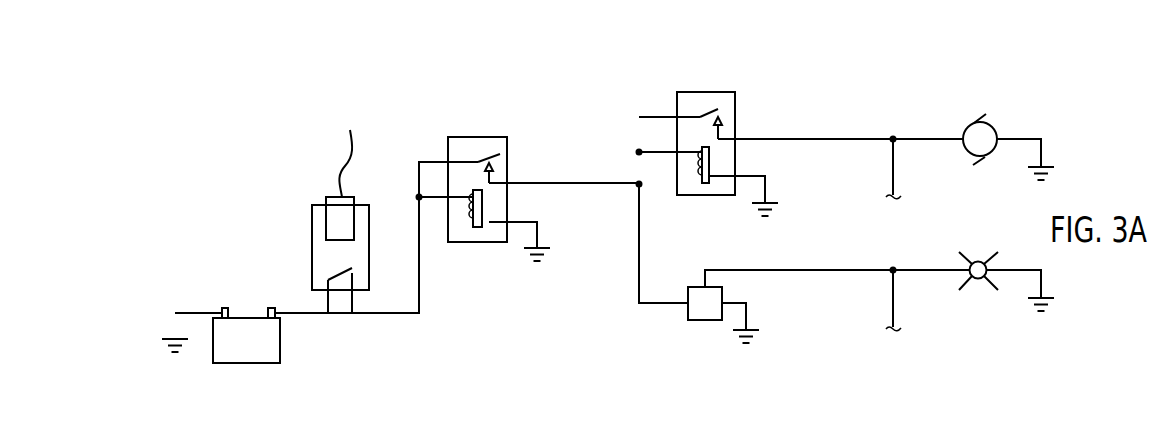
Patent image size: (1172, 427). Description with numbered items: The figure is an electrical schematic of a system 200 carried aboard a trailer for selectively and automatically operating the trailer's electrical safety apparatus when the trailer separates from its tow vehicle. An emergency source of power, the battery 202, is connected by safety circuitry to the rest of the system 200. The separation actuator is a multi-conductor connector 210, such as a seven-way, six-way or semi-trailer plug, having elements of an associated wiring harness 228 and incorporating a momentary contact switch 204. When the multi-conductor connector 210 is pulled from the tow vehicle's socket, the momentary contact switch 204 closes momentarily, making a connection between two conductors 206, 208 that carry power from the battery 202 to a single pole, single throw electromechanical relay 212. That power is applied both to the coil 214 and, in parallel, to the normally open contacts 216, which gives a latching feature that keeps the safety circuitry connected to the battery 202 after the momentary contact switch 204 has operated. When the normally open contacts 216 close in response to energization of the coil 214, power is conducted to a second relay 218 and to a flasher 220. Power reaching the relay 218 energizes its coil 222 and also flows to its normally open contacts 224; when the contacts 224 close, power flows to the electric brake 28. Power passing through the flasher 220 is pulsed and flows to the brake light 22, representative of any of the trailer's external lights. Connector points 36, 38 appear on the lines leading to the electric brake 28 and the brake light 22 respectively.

The system 200 is at (1070, 73).
The battery 202 is at (243, 363).
The momentary contact switch 204 is at (300, 270).
The conductor 206 is at (300, 314).
The conductor 208 is at (395, 314).
The multi-conductor connector 210 is at (323, 181).
The relay 212 is at (468, 126).
The coil 214 is at (477, 249).
The normally open contacts 216 is at (504, 207).
The second relay 218 is at (699, 84).
The flasher 220 is at (700, 321).
The coil 222 is at (707, 199).
The normally open contacts 224 is at (744, 143).
The wiring harness 228 is at (346, 162).
The electric brake 28 is at (966, 130).
The connector 36 is at (894, 176).
The connector 38 is at (894, 300).
The brake light 22 is at (963, 281).